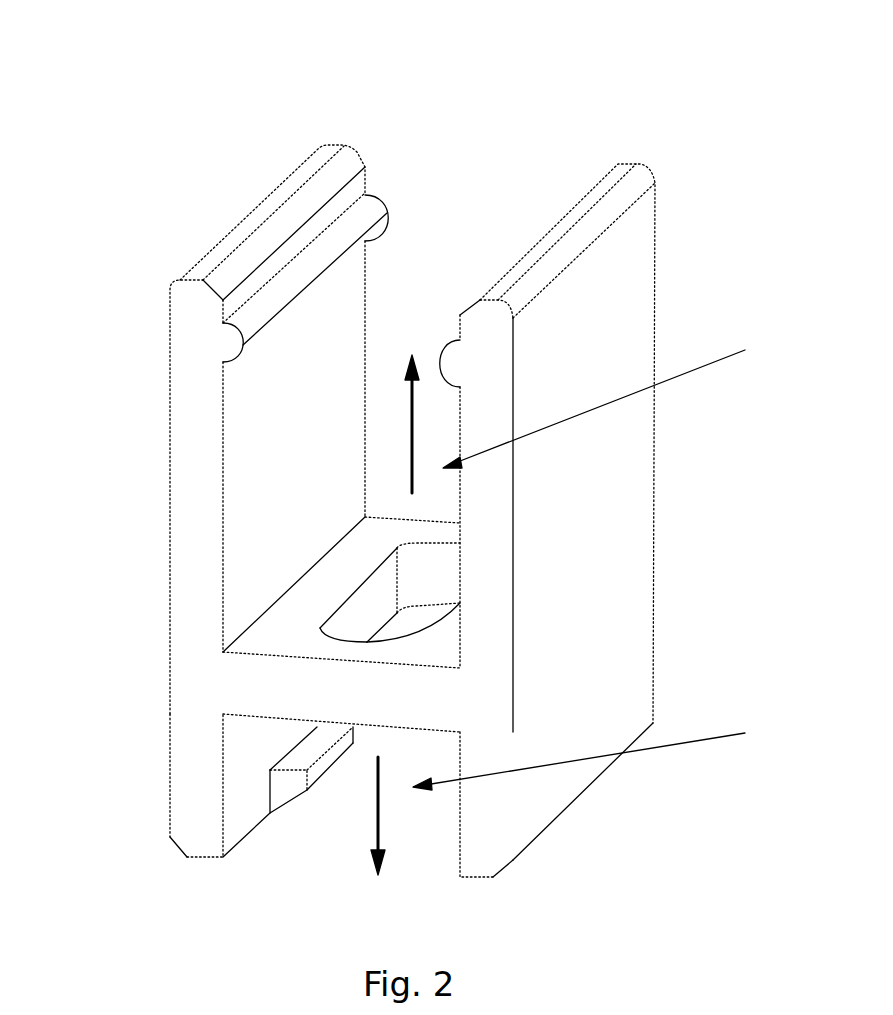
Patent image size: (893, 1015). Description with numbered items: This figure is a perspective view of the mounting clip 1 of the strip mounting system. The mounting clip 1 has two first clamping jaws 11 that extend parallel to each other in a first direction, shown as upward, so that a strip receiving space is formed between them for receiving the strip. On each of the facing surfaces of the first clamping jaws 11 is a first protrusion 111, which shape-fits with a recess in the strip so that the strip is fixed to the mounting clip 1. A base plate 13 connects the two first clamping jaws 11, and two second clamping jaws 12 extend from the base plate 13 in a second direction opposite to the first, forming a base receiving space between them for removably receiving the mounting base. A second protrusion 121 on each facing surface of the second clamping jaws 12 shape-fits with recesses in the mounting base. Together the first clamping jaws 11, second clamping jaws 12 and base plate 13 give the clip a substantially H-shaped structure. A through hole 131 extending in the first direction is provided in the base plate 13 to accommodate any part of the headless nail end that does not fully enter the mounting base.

The mounting clip 1 is at (682, 97).
The first clamping jaw 11 is at (193, 462).
The first protrusion 111 is at (448, 358).
The second clamping jaw 12 is at (188, 802).
The second protrusion 121 is at (285, 787).
The base plate 13 is at (252, 692).
The through hole 131 is at (418, 592).